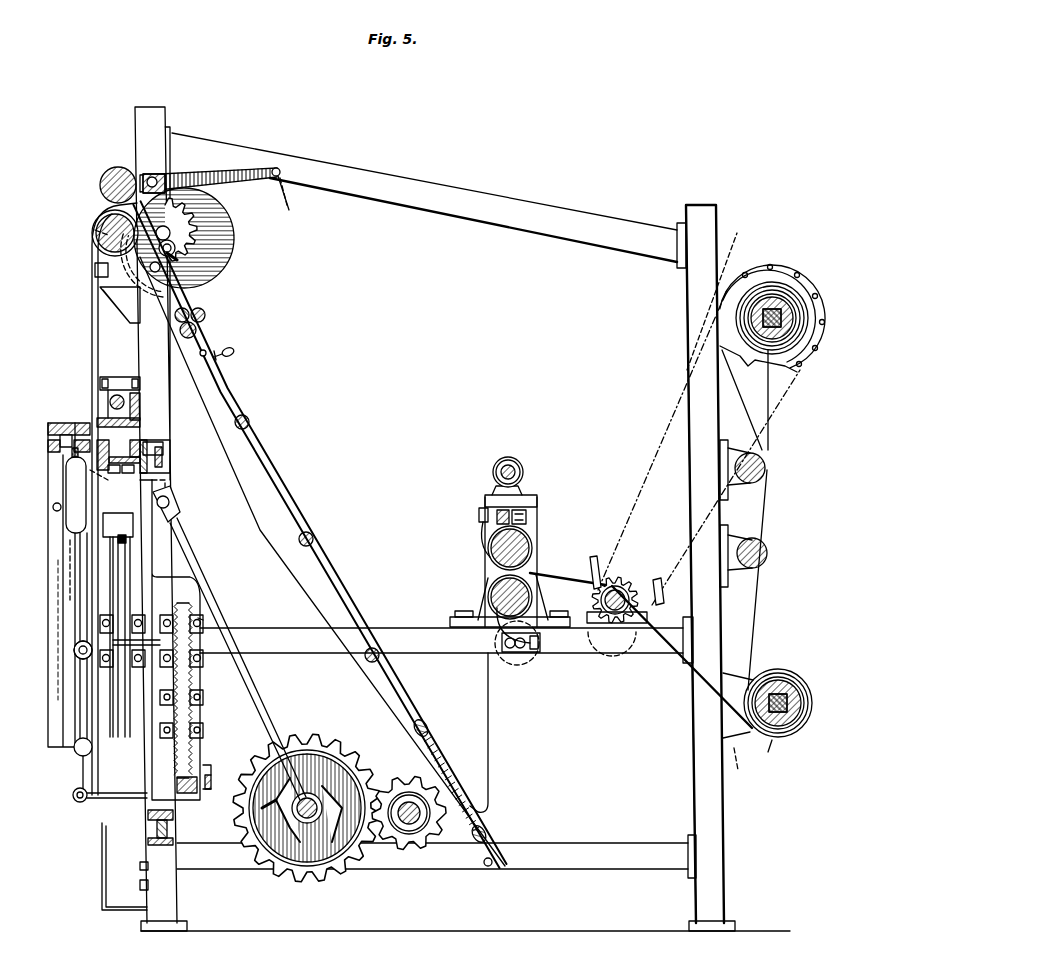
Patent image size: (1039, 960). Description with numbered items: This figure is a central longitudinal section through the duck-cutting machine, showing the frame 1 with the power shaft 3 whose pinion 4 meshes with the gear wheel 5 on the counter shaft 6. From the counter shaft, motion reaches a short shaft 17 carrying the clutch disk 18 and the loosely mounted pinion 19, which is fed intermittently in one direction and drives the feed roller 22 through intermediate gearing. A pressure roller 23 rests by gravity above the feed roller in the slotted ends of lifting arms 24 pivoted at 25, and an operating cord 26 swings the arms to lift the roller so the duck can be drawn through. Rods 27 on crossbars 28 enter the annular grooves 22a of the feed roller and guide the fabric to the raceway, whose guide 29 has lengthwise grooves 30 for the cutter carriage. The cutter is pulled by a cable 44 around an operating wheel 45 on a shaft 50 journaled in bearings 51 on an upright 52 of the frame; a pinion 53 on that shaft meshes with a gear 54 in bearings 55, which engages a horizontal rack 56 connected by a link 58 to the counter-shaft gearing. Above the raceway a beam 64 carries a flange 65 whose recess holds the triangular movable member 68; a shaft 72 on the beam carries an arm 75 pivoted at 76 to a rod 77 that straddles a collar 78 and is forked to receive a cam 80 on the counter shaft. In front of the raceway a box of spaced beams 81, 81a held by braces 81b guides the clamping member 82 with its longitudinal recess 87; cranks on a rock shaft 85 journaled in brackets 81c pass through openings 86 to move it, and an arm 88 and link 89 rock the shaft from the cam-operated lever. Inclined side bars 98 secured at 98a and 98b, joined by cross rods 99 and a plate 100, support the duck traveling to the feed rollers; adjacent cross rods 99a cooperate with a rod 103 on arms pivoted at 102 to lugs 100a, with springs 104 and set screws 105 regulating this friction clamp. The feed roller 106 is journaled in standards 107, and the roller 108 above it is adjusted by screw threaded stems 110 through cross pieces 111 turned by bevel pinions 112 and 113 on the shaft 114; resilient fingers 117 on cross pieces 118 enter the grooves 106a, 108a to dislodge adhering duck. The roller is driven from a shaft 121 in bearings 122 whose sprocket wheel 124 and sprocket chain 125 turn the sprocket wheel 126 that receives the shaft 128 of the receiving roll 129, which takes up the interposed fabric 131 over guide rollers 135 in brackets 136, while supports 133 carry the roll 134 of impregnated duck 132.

The frame 1 is at (697, 796).
The power shaft 3 is at (399, 838).
The pinion 4 is at (430, 838).
The gear wheel 5 is at (330, 742).
The counter shaft 6 is at (313, 822).
The short shaft 17 is at (198, 213).
The disk 18 is at (216, 228).
The second pinion 19 is at (176, 240).
The feed roller 22 is at (97, 215).
The annular grooves 22a is at (95, 230).
The pressure roller 23 is at (115, 167).
The lifting arms 24 is at (215, 170).
The pivots 25 is at (152, 176).
The operating cord 26 is at (285, 212).
The rods 27 is at (92, 316).
The crossbars 28 is at (95, 266).
The guide 29 is at (150, 442).
The grooves 30 is at (130, 457).
The cable 44 is at (122, 535).
The operating wheel 45 is at (124, 568).
The shaft 50 is at (150, 614).
The bearings 51 is at (78, 660).
The upright 52 is at (155, 562).
The pinion 53 is at (205, 620).
The gear 54 is at (193, 682).
The bearings 55 is at (203, 714).
The rack 56 is at (177, 788).
The link 58 is at (209, 772).
The beam 64 is at (140, 406).
The flange 65 is at (100, 410).
The movable member 68 is at (85, 440).
The shaft 72 is at (124, 400).
The arm 75 is at (162, 487).
The pivot 76 is at (172, 498).
The rod 77 is at (262, 706).
The collar 78 is at (330, 790).
The cam 80 is at (255, 820).
The beam 81 is at (80, 650).
The beam 81a is at (58, 425).
The braces 81b is at (76, 752).
The brackets 81c is at (61, 565).
The clamping member 82 is at (72, 464).
The rock shaft 85 is at (50, 590).
The openings 86 is at (60, 630).
The longitudinal recess 87 is at (97, 483).
The arm 88 is at (74, 800).
The link 89 is at (126, 840).
The side bars 98 is at (298, 500).
The securing point 98a is at (494, 862).
The securing point 98b is at (175, 317).
The cross rods 99 is at (249, 421).
The cross rods 99a is at (182, 333).
The plate 100 is at (484, 828).
The lugs 100a is at (180, 252).
The pivot 102 is at (170, 272).
The rod 103 is at (206, 316).
The springs 104 is at (192, 368).
The set screws 105 is at (235, 352).
The feed roller 106 is at (490, 582).
The annular grooves 106a is at (492, 600).
The standards 107 is at (532, 531).
The second roller 108 is at (532, 548).
The annular grooves 108a is at (532, 563).
The screw threaded stems 110 is at (527, 515).
The cross pieces 111 is at (537, 500).
The bevel pinion 112 is at (522, 490).
The bevel pinion 113 is at (512, 457).
The shaft 114 is at (516, 468).
The resilient finger 117 is at (484, 540).
The cross pieces 118 is at (480, 512).
The shaft 121 is at (625, 626).
The bearings 122 is at (600, 630).
The sprocket wheel 124 is at (632, 580).
The sprocket chain 125 is at (652, 478).
The sprocket wheel 126 is at (776, 262).
The shaft 128 is at (785, 365).
The receiving roll 129 is at (760, 319).
The fabric 131 is at (760, 445).
The duck 132 is at (338, 573).
The brackets or supports 133 is at (726, 262).
The roll 134 is at (776, 754).
The guide rollers 135 is at (768, 538).
The brackets 136 is at (748, 485).